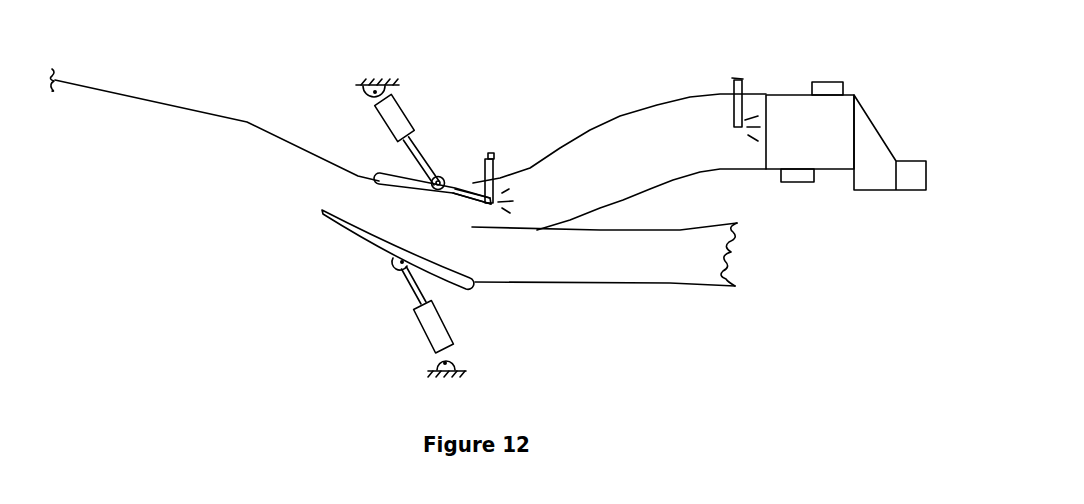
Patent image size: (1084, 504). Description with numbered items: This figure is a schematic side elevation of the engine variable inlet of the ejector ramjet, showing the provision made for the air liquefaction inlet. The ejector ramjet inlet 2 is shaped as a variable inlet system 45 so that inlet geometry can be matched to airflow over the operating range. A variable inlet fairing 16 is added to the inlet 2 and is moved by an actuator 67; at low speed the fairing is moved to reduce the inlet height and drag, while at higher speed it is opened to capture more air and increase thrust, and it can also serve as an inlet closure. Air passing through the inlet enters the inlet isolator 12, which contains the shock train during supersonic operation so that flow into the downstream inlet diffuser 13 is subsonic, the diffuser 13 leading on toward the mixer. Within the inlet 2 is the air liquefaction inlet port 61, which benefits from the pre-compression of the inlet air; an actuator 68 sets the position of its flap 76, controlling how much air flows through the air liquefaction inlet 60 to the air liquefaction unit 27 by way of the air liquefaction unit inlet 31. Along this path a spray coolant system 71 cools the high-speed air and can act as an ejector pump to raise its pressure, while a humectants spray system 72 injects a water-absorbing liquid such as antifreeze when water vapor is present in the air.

The ejector ramjet inlet 2 is at (335, 185).
The inlet isolator 12 is at (508, 257).
The inlet diffuser 13 is at (735, 255).
The variable inlet fairing 16 is at (378, 245).
The air liquefaction unit 27 is at (853, 136).
The air liquefaction unit inlet 31 is at (766, 122).
The variable inlet system 45 is at (392, 213).
The air liquefaction inlet 60 is at (658, 102).
The air liquefaction inlet port 61 is at (477, 215).
The actuator 67 is at (422, 330).
The actuator 68 is at (408, 120).
The spray coolant system 71 is at (490, 173).
The humectants spray system 72 is at (743, 82).
The flap 76 is at (455, 191).